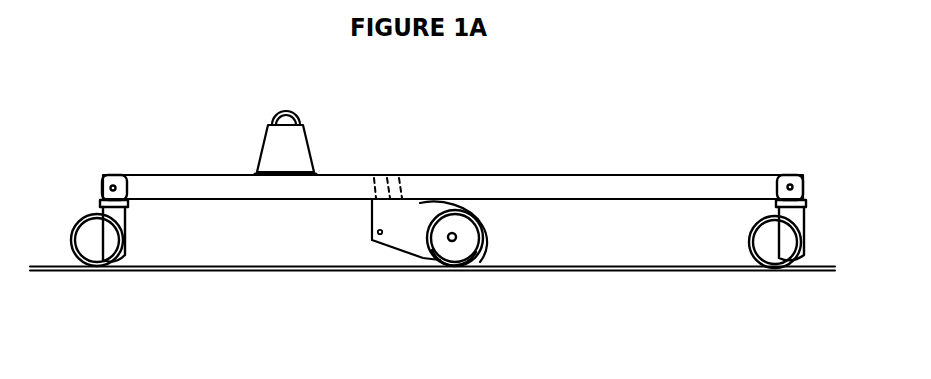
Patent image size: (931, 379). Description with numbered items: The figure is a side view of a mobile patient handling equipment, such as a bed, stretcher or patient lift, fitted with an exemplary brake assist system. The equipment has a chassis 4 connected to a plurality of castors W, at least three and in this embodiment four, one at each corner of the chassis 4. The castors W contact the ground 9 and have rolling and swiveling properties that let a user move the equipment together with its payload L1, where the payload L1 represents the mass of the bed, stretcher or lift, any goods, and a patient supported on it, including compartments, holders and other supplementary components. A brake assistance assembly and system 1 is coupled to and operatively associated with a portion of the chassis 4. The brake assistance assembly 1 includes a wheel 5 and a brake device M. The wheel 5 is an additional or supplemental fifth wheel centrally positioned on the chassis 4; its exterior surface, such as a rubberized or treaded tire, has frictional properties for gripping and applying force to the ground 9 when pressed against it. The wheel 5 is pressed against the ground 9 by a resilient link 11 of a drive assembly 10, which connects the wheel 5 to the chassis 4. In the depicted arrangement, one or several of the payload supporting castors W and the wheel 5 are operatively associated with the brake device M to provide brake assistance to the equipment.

The brake assistance assembly and system 1 is at (336, 240).
The chassis 4 is at (516, 185).
The wheel 5 is at (465, 268).
The ground 9 is at (558, 269).
The drive assembly 10 is at (378, 177).
The resilient link 11 is at (425, 230).
The payload L1 is at (292, 145).
The brake device M is at (484, 240).
The castors W is at (90, 232).